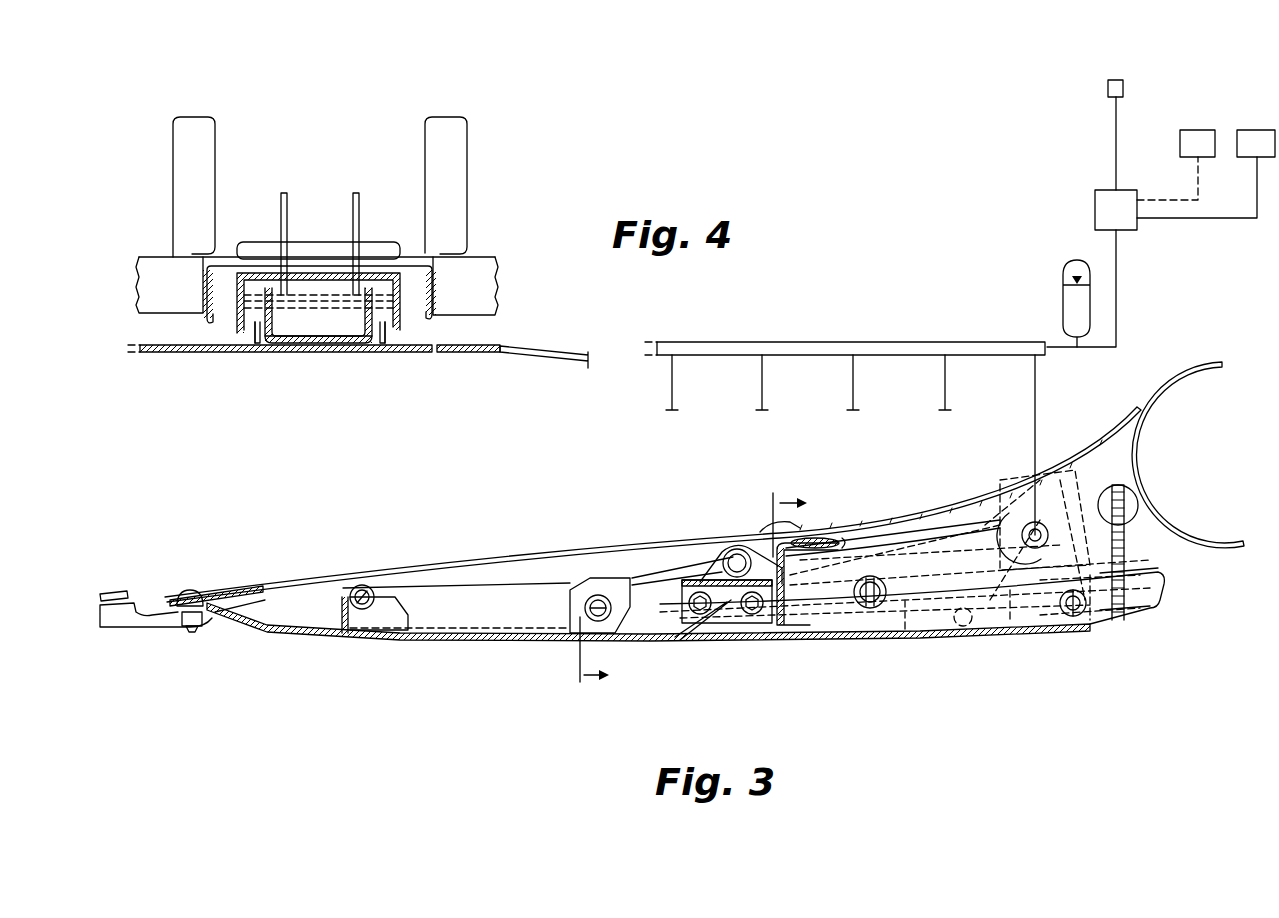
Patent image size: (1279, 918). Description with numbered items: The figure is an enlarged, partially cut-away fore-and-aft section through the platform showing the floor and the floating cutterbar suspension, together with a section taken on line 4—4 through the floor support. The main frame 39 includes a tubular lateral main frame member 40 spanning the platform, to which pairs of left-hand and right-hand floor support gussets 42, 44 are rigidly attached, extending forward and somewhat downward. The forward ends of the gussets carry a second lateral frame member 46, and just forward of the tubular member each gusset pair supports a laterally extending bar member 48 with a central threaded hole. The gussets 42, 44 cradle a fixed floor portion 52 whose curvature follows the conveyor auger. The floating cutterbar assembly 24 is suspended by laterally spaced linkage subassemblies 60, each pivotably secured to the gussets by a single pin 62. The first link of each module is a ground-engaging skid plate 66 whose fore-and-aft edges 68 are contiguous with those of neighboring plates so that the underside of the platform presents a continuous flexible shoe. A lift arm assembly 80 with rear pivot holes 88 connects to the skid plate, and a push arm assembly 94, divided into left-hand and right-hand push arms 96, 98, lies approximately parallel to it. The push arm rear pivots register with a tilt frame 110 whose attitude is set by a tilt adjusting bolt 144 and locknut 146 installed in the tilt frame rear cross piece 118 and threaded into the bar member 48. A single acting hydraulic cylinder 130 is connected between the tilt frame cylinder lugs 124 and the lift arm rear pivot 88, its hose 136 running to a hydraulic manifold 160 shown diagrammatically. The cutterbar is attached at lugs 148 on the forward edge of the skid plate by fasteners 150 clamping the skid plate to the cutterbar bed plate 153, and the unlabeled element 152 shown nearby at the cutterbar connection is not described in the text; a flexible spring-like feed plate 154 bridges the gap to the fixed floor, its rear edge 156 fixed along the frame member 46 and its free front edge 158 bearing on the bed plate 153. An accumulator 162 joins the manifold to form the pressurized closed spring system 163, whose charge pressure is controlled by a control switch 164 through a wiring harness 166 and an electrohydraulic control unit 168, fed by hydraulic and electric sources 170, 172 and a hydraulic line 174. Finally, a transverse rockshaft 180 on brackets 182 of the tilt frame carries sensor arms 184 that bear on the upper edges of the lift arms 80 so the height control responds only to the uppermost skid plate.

In FIG. 3, the section line 4— 4 is at (683, 589).
In FIG. 3, the floating cutterbar assembly 24 is at (135, 652).
In FIG. 3, the main frame 39 is at (1210, 601).
In FIG. 3, the tubular lateral main frame member 40 is at (1218, 365).
In FIG. 4, the left-hand platform floor support gusset 42 is at (465, 158).
In FIG. 3, the left-hand platform floor support gusset 42 is at (1087, 440).
In FIG. 4, the right-hand platform floor support gusset 44 is at (187, 157).
In FIG. 3, the right-hand platform floor support gusset 44 is at (653, 493).
In FIG. 4, the second lateral frame member 46 is at (473, 299).
In FIG. 3, the second lateral frame member 46 is at (774, 543).
In FIG. 3, the laterally extending bar member 48 is at (1140, 498).
In FIG. 3, the fixed floor portion 52 is at (905, 530).
In FIG. 3, the linkage subassembly 60 is at (681, 647).
In FIG. 3, the pin 62 is at (866, 607).
In FIG. 4, the skid plate 66 is at (217, 352).
In FIG. 3, the skid plate 66 is at (405, 641).
In FIG. 4, the fore-and-aft extending edge 68 is at (498, 352).
In FIG. 4, the lift arm assembly 80 is at (295, 324).
In FIG. 3, the lift arm assembly 80 is at (461, 585).
In FIG. 3, the rear pivot hole 88 is at (975, 640).
In FIG. 3, the push arm assembly 94 is at (908, 647).
In FIG. 4, the left-hand push arm 96 is at (383, 342).
In FIG. 4, the right-hand push arm 98 is at (250, 340).
In FIG. 4, the tilt frame 110 is at (316, 232).
In FIG. 3, the tilt frame 110 is at (1074, 637).
In FIG. 3, the tilt frame rear cross piece 118 is at (1082, 632).
In FIG. 4, the tilt frame cylinder lug 124 is at (280, 207).
In FIG. 3, the single acting hydraulic cylinder 130 is at (1007, 520).
In FIG. 3, the hose 136 is at (762, 385).
In FIG. 3, the tilt adjusting bolt 144 is at (1150, 606).
In FIG. 3, the locknut 146 is at (1158, 577).
In FIG. 3, the lug 148 is at (215, 615).
In FIG. 3, the fastener 150 is at (165, 575).
In FIG. 3, the tab 152 is at (113, 628).
In FIG. 3, the cutterbar bed plate 153 is at (222, 590).
In FIG. 3, the flexible spring-like feed plate 154 is at (297, 582).
In FIG. 3, the rear edge of the feed plate 156 is at (812, 538).
In FIG. 3, the free front edge of the feed plate 158 is at (235, 600).
In FIG. 3, the hydraulic manifold 160 is at (812, 342).
In FIG. 3, the accumulator 162 is at (1062, 285).
In FIG. 3, the spring system 163 is at (907, 320).
In FIG. 3, the control switch 164 is at (1123, 87).
In FIG. 3, the wiring harness 166 is at (1115, 147).
In FIG. 3, the electrohydraulic control unit 168 is at (1095, 195).
In FIG. 3, the hydraulic power source 170 is at (1200, 115).
In FIG. 3, the electric power source 172 is at (1258, 130).
In FIG. 3, the hydraulic line 174 is at (1118, 260).
In FIG. 3, the transverse rockshaft 180 is at (726, 555).
In FIG. 3, the bracket 182 is at (738, 548).
In FIG. 3, the sensor arm 184 is at (688, 570).